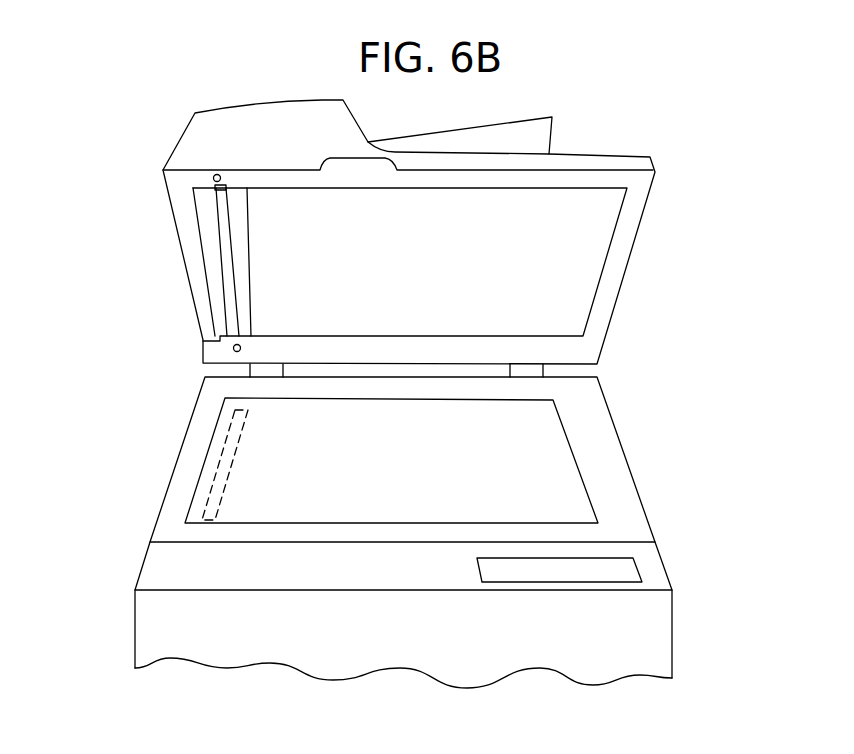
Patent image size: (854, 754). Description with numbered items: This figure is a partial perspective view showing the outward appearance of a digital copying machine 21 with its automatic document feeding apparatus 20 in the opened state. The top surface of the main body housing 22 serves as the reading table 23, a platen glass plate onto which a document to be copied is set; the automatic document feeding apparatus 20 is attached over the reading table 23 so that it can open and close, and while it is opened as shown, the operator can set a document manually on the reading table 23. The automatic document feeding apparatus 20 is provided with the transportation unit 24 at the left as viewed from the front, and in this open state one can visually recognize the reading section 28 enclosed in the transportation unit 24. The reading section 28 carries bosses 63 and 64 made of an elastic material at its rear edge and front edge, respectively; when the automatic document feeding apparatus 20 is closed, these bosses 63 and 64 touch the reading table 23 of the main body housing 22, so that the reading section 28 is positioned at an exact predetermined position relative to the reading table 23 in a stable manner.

The automatic document feeding apparatus 20 is at (597, 127).
The digital copying machine 21 is at (107, 573).
The main body housing 22 is at (672, 628).
The reading table 23 is at (555, 455).
The transportation unit 24 is at (193, 247).
The reading section 28 is at (230, 293).
The boss 63 is at (233, 349).
The boss 64 is at (213, 178).